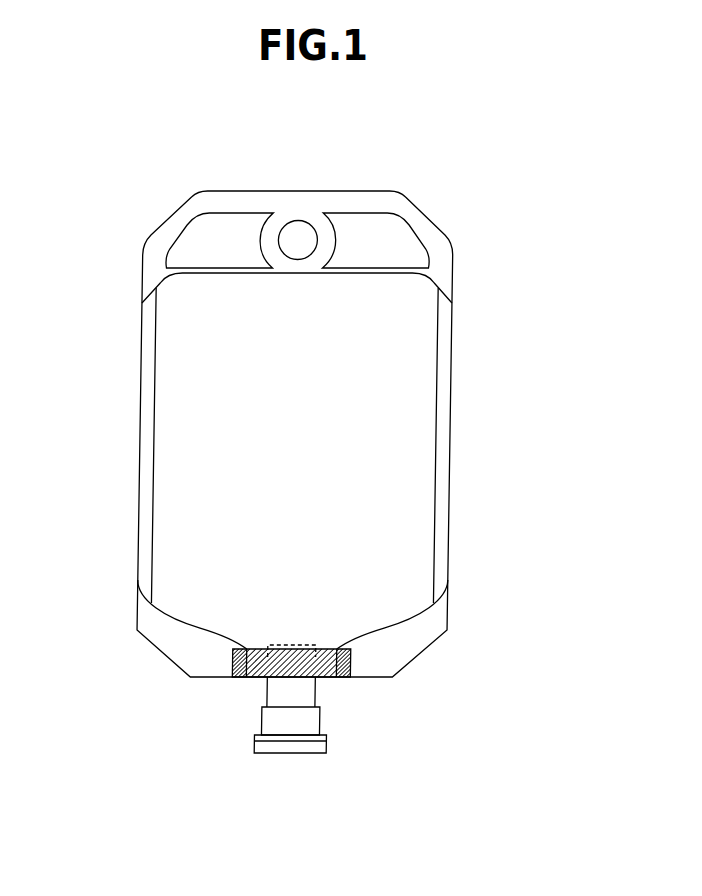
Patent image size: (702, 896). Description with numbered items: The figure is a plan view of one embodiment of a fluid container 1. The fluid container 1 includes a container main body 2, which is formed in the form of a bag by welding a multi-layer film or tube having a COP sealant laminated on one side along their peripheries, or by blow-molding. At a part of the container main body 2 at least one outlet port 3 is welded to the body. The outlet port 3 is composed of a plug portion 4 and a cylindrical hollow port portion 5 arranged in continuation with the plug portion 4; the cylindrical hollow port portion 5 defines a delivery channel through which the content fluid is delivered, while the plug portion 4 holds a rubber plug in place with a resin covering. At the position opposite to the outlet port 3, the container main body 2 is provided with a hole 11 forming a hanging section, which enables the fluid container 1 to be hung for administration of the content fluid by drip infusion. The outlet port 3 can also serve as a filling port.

The infusion bag 1 is at (515, 249).
The bag body 2 is at (486, 457).
The port member 3 is at (194, 757).
The cap 4 is at (290, 747).
The port tube 5 is at (284, 688).
The hanging hole 11 is at (296, 241).